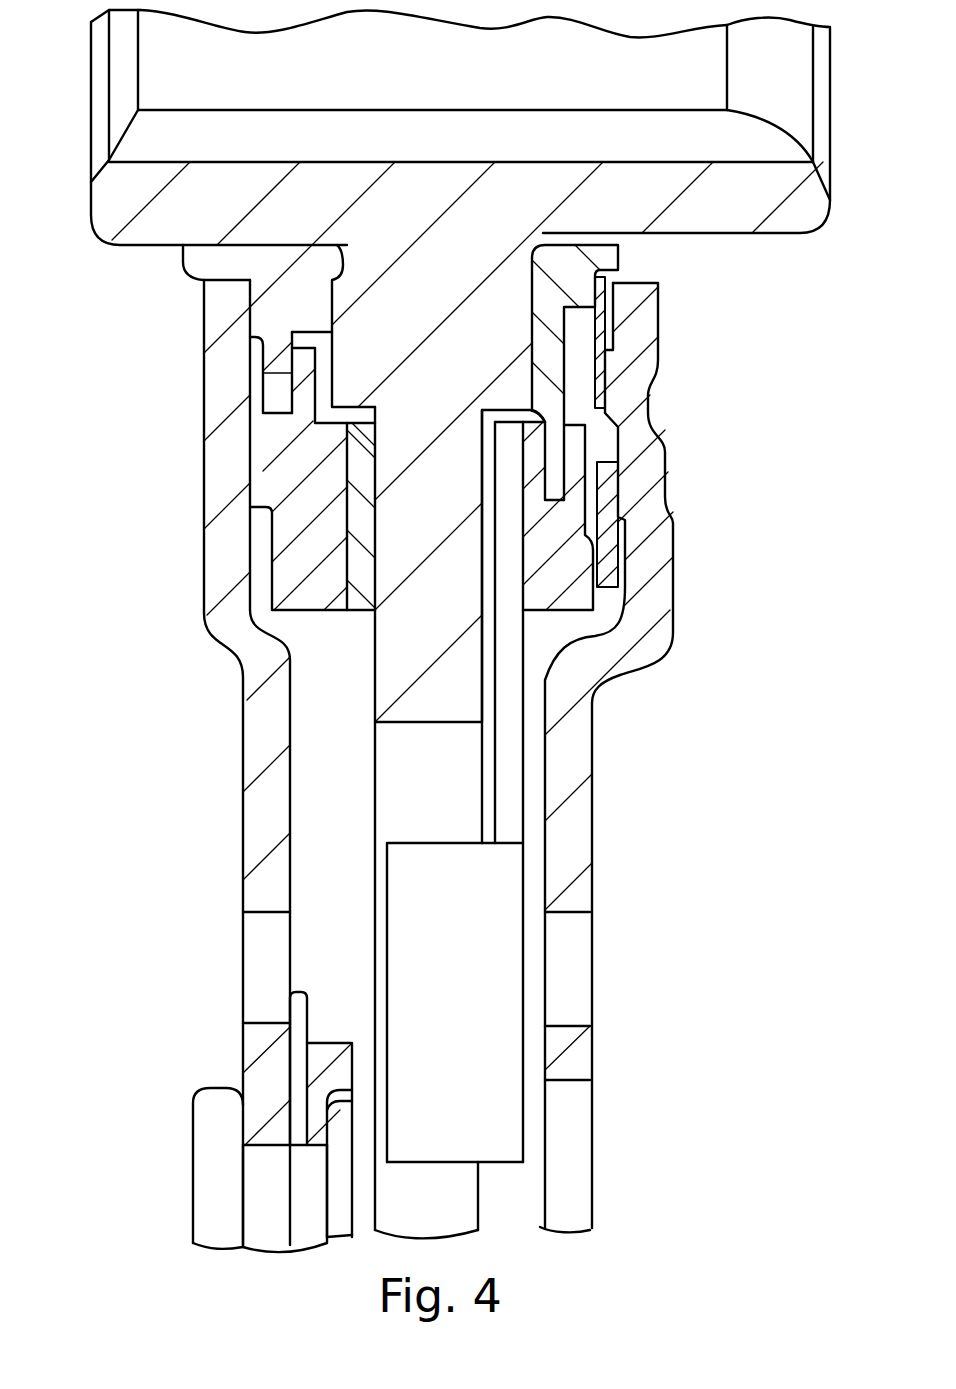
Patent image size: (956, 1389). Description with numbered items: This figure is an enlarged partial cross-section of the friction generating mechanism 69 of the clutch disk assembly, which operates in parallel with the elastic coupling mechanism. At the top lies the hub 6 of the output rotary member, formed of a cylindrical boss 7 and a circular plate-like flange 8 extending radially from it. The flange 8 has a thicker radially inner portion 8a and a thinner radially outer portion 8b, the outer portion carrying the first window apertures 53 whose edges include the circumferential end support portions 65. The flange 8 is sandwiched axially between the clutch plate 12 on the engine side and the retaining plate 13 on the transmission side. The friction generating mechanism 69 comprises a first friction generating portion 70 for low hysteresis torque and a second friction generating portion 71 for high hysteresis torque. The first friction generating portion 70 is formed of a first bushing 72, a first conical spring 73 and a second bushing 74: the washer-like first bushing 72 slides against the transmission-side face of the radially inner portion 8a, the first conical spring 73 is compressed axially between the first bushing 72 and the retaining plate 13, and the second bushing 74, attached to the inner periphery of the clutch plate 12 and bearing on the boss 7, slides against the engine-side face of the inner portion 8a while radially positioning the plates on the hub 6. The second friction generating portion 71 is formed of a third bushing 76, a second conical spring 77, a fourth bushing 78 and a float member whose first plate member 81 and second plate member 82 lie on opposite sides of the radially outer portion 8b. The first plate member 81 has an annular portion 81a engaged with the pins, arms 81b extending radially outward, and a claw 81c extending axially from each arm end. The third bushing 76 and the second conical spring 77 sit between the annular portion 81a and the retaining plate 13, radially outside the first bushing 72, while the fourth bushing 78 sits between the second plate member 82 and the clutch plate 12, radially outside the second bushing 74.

The hub 6 is at (71, 160).
The boss 7 is at (177, 213).
The flange 8 is at (333, 685).
The radially inner portion 8a is at (377, 303).
The radially outer portion 8b is at (417, 533).
The clutch plate 12 is at (222, 545).
The retaining plate 13 is at (648, 567).
The first window apertures 53 is at (403, 780).
The circumferential end support portions 65 is at (408, 814).
The friction generating mechanism 69 is at (817, 298).
The first friction generating portion 70 is at (763, 293).
The second friction generating portion 71 is at (767, 473).
The first bushing 72 is at (550, 347).
The first conical spring 73 is at (600, 313).
The second bushing 74 is at (263, 300).
The third bushing 76 is at (575, 558).
The second conical spring 77 is at (605, 512).
The fourth bushing 78 is at (293, 475).
The first plate member 81 is at (532, 788).
The annular portion 81a is at (507, 450).
The arms 81b is at (510, 743).
The claw 81c is at (437, 1000).
The second plate member 82 is at (358, 507).